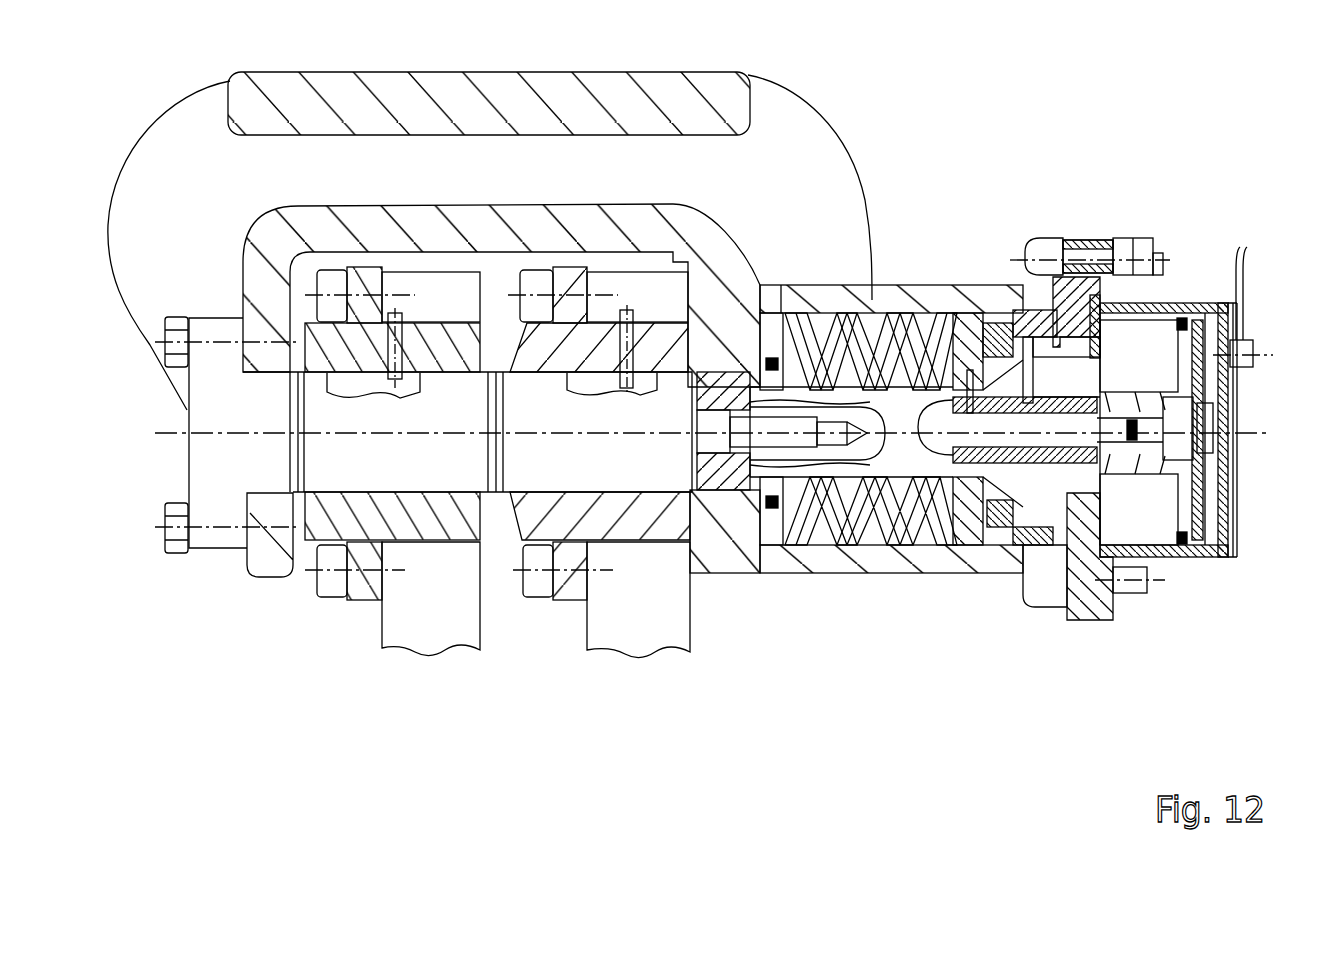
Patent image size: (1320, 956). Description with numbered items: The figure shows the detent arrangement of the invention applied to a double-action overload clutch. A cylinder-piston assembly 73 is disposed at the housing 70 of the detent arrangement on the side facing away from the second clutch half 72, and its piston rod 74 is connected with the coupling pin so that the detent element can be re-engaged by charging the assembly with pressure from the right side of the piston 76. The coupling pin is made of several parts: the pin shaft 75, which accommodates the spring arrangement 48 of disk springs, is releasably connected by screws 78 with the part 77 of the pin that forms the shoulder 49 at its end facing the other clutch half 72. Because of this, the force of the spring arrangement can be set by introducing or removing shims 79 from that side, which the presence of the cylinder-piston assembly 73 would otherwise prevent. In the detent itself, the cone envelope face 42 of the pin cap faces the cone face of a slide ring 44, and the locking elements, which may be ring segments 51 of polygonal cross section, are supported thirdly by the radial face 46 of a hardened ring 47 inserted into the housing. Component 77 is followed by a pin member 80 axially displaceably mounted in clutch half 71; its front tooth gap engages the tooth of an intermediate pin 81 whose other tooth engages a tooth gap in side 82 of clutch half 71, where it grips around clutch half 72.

The cone envelope face 42 is at (992, 548).
The slide ring 44 is at (990, 317).
The radial face 46 is at (1090, 553).
The hardened ring 47 is at (1080, 252).
The spring arrangement 48 is at (897, 178).
The collar 49 is at (748, 345).
The ring segments 51 is at (1045, 553).
The housing 70 is at (955, 300).
The clutch half 71 is at (625, 607).
The second clutch half 72 is at (410, 617).
The cylinder-piston assembly 73 is at (1153, 333).
The piston rod 74 is at (1170, 540).
The pin shaft 75 is at (897, 440).
The piston 76 is at (1205, 507).
The pin part 77 is at (760, 505).
The screws 78 is at (697, 545).
The shims 79 is at (712, 450).
The pin member 80 is at (522, 470).
The intermediate pin 81 is at (318, 572).
The side of clutch half 82 is at (228, 533).